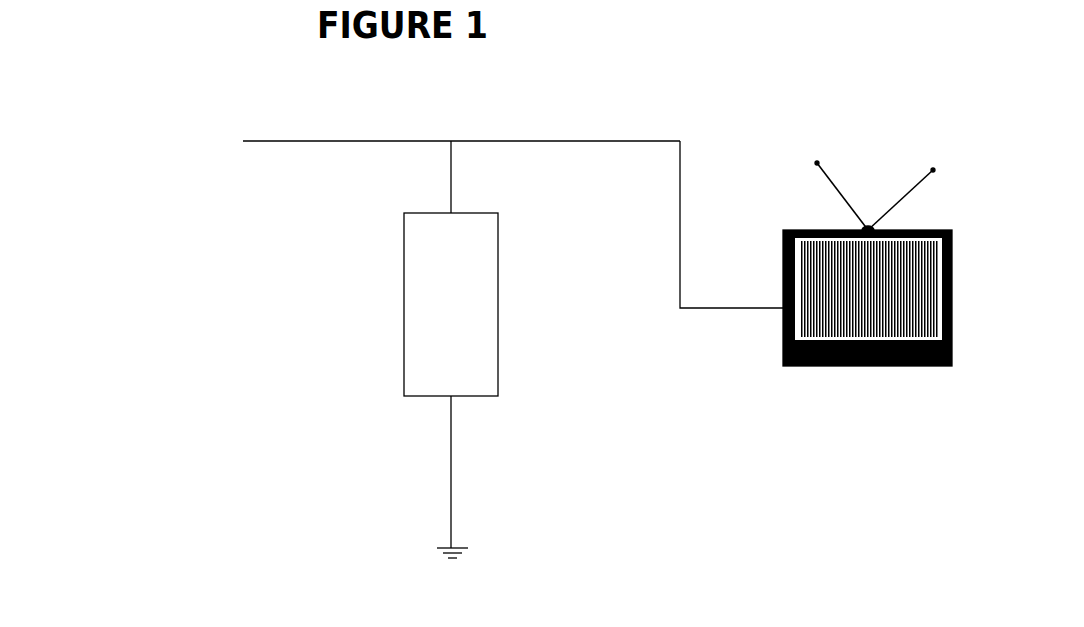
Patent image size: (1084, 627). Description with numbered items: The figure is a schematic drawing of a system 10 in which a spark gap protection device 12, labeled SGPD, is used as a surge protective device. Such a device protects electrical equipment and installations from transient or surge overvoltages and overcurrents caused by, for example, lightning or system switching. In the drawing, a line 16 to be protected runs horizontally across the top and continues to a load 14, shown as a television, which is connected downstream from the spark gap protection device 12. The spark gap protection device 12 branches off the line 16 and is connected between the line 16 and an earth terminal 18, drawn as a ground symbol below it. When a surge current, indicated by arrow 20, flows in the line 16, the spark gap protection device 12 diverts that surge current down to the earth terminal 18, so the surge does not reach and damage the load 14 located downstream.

The system 10 is at (413, 220).
The spark gap protection device 12 is at (398, 344).
The load 14 is at (826, 263).
The line 16 is at (461, 116).
The earth terminal 18 is at (499, 529).
The arrow 20 is at (358, 119).